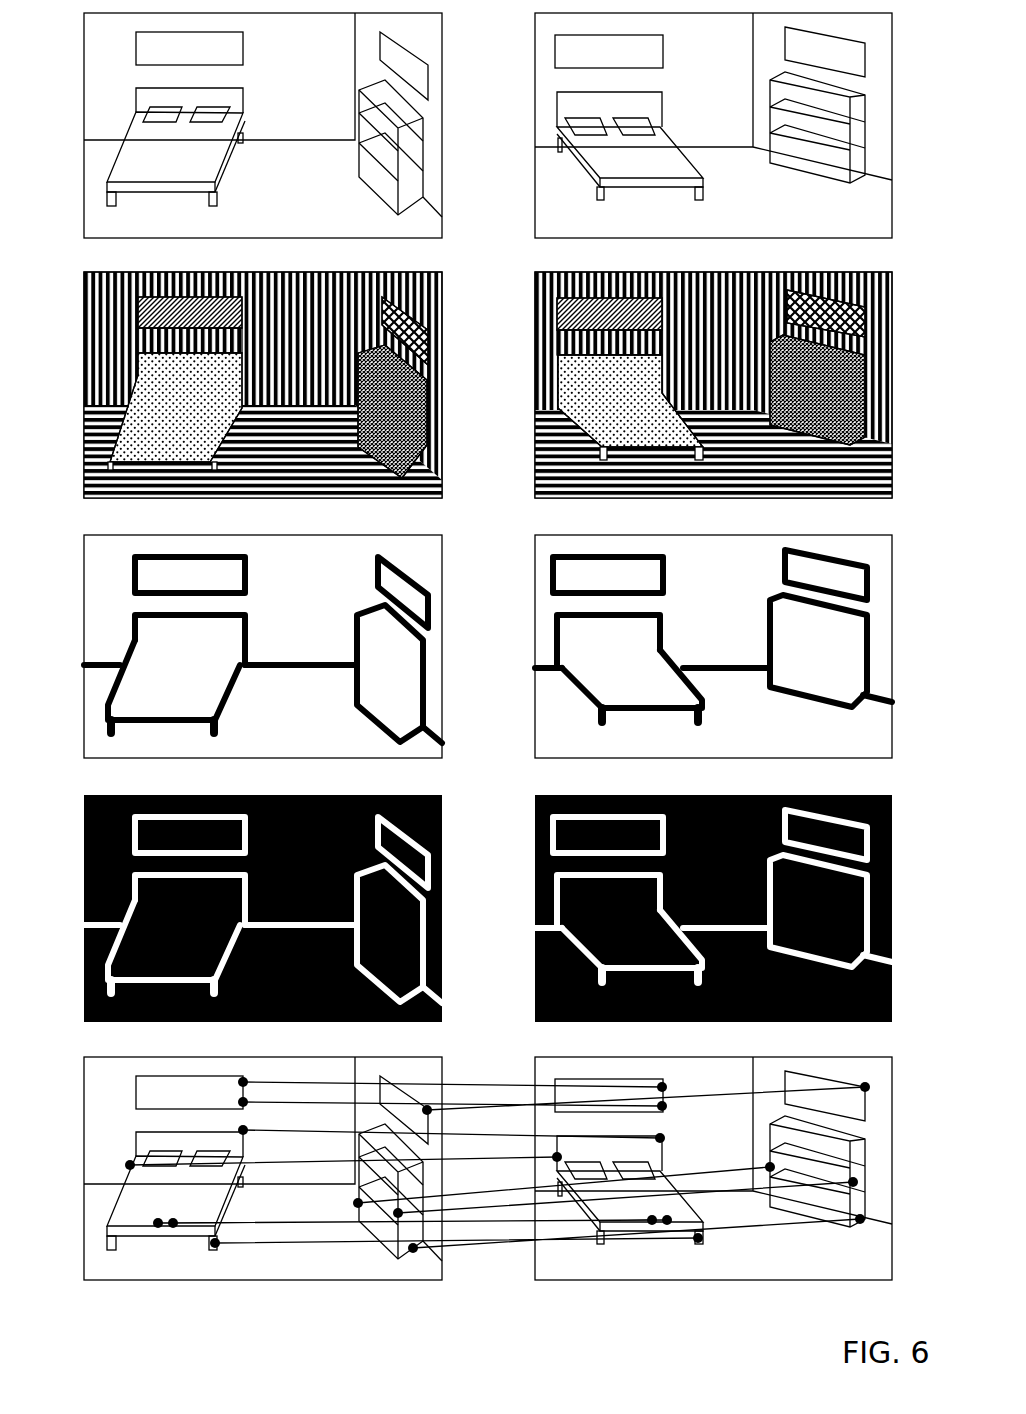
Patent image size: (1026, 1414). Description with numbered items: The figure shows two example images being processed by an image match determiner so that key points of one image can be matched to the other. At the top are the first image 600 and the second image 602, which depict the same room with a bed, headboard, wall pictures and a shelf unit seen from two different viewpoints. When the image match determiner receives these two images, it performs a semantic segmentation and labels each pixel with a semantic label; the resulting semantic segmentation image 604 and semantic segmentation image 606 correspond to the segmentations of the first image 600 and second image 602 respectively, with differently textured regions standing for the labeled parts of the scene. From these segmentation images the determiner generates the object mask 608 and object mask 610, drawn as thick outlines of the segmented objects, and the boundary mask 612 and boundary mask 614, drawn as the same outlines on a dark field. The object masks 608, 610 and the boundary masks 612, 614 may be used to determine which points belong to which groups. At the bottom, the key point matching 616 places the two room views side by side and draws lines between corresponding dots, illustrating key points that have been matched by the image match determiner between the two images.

The first image 600 is at (74, 46).
The second image 602 is at (525, 46).
The semantic segmentation image 604 is at (74, 305).
The semantic segmentation image 606 is at (525, 305).
The object mask 608 is at (74, 568).
The object mask 610 is at (525, 568).
The boundary mask 612 is at (74, 828).
The boundary mask 614 is at (525, 828).
The key point matching 616 is at (468, 1044).